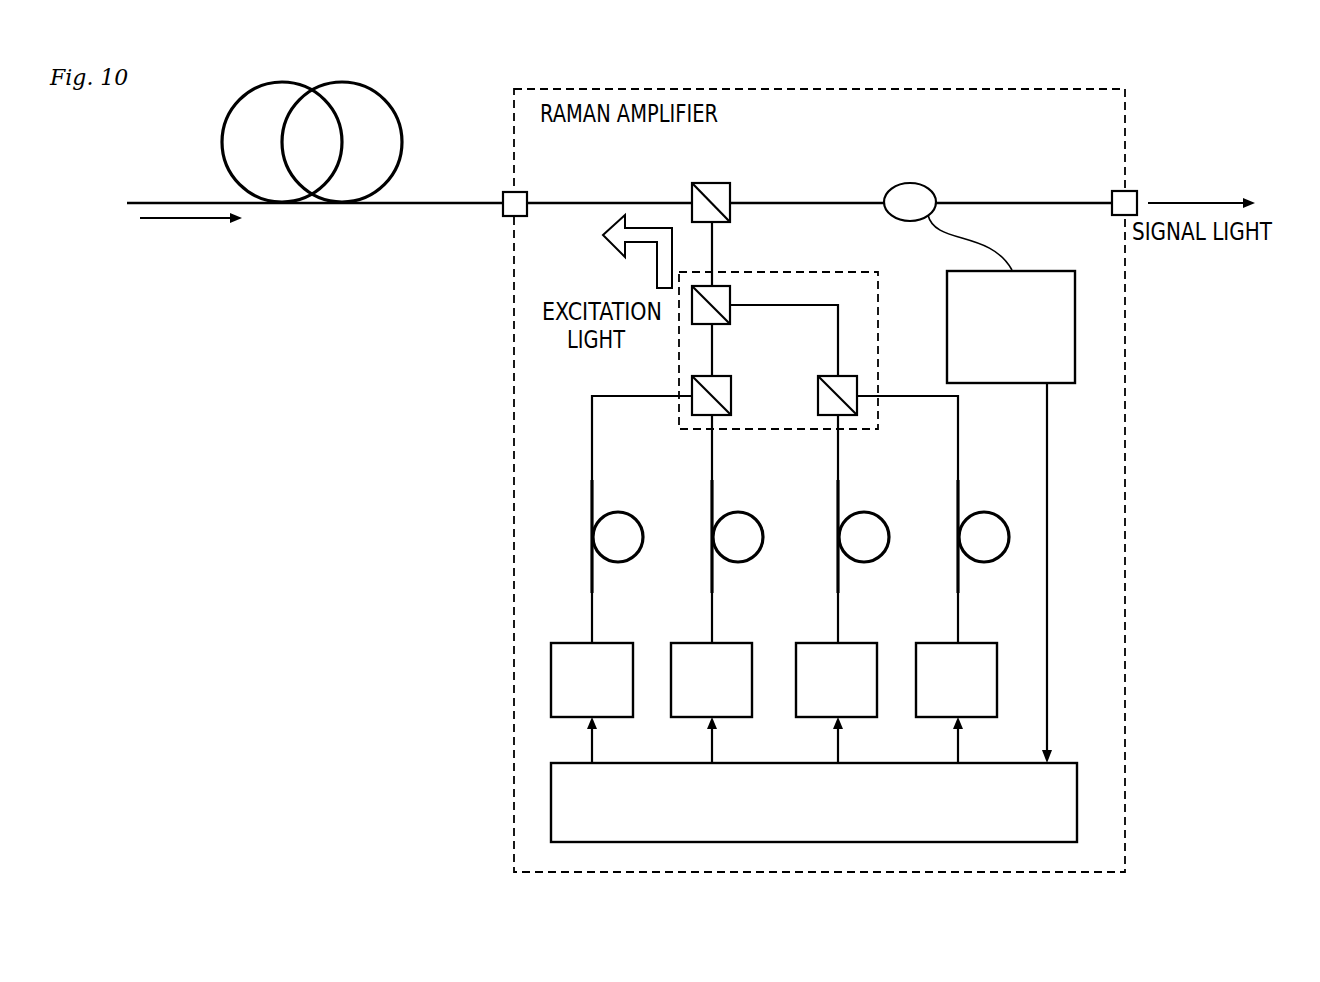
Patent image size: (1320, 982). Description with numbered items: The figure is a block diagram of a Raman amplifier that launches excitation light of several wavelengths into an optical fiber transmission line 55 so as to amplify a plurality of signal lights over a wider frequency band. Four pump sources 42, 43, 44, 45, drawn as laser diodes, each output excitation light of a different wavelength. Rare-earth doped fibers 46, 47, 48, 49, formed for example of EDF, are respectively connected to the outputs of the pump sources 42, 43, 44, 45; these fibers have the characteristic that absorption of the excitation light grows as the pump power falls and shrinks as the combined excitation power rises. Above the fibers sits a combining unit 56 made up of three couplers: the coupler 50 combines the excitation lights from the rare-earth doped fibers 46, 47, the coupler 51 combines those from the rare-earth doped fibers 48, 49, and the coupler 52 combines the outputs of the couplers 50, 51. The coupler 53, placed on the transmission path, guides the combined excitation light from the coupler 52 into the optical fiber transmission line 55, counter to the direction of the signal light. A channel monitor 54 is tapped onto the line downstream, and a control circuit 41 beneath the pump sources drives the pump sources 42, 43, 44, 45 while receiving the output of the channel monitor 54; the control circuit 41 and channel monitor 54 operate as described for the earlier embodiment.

The control circuit 41 is at (1063, 762).
The pump source 42 is at (612, 643).
The pump source 43 is at (730, 643).
The pump source 44 is at (855, 643).
The pump source 45 is at (975, 642).
The rare-earth doped fiber 46 is at (617, 510).
The rare-earth doped fiber 47 is at (737, 510).
The rare-earth doped fiber 48 is at (862, 510).
The rare-earth doped fiber 49 is at (983, 509).
The coupler 50 is at (716, 375).
The coupler 51 is at (846, 375).
The coupler 52 is at (716, 285).
The coupler 53 is at (715, 182).
The channel monitor 54 is at (1038, 270).
The optical fiber transmission line 55 is at (254, 204).
The combining unit 56 is at (939, 373).